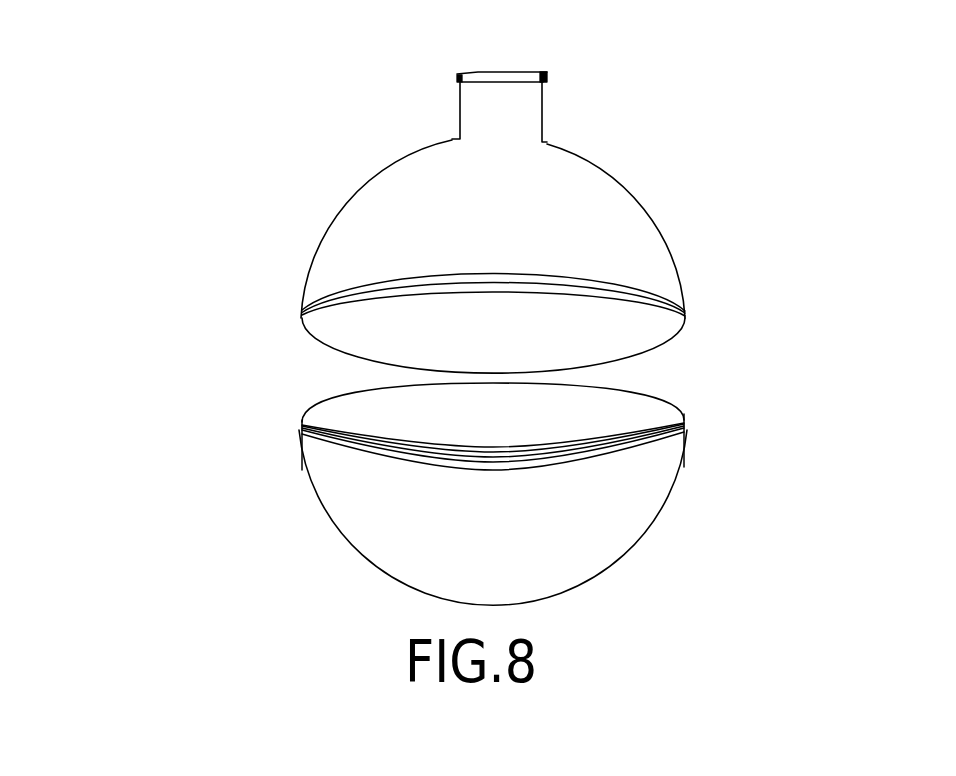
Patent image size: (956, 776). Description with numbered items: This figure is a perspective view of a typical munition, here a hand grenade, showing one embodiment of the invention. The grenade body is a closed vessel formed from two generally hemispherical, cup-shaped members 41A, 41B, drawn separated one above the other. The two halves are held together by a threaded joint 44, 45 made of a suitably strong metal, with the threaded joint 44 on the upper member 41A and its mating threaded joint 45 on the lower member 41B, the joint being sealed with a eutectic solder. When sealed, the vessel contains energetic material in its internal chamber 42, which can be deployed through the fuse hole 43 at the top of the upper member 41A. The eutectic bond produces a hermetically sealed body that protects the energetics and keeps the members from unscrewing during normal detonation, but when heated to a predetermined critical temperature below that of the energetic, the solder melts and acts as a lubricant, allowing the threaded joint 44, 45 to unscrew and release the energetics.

The fuse hole 43 is at (482, 72).
The hemispherical cup-shaped member 41A is at (572, 205).
The threaded joint 44 is at (300, 314).
The internal chamber 42 is at (548, 412).
The threaded joint 45 is at (345, 448).
The hemispherical cup-shaped member 41B is at (562, 547).